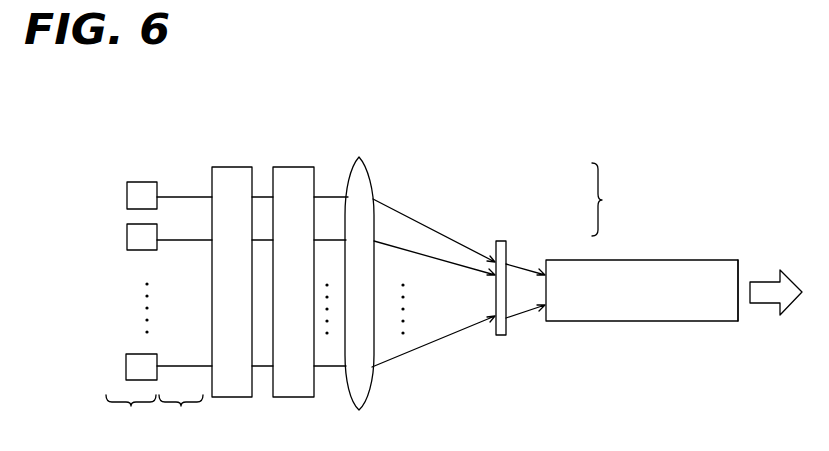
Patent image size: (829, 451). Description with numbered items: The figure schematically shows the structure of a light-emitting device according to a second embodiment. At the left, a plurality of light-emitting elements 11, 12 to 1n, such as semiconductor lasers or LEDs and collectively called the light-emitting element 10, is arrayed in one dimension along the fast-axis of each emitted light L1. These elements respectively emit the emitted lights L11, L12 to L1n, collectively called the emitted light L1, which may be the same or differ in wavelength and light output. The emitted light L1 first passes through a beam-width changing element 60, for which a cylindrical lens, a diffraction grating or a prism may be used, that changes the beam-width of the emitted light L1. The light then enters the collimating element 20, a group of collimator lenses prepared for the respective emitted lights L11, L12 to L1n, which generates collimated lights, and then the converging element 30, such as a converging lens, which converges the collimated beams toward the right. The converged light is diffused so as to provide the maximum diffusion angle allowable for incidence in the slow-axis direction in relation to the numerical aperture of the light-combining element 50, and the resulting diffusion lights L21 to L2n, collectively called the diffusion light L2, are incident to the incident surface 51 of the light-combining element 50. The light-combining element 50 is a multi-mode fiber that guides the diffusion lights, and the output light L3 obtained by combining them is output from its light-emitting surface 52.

The light-emitting element 11 is at (137, 182).
The light-emitting element 12 is at (133, 251).
The light-emitting element 1n is at (134, 354).
The light-emitting element 10 is at (131, 416).
The emitted light L1 is at (181, 416).
The emitted light L11 is at (187, 197).
The emitted light L12 is at (175, 240).
The emitted light L1n is at (186, 366).
The beam-width changing element 60 is at (229, 397).
The collimating element 20 is at (289, 397).
The converging element 30 is at (368, 383).
The incident surface 51 is at (532, 323).
The light-combining element 50 is at (650, 322).
The light-emitting surface 52 is at (740, 318).
The diffusion light L21 is at (513, 285).
The diffusion light L2n is at (575, 192).
The diffusion light L2 is at (607, 199).
The output light L3 is at (768, 282).